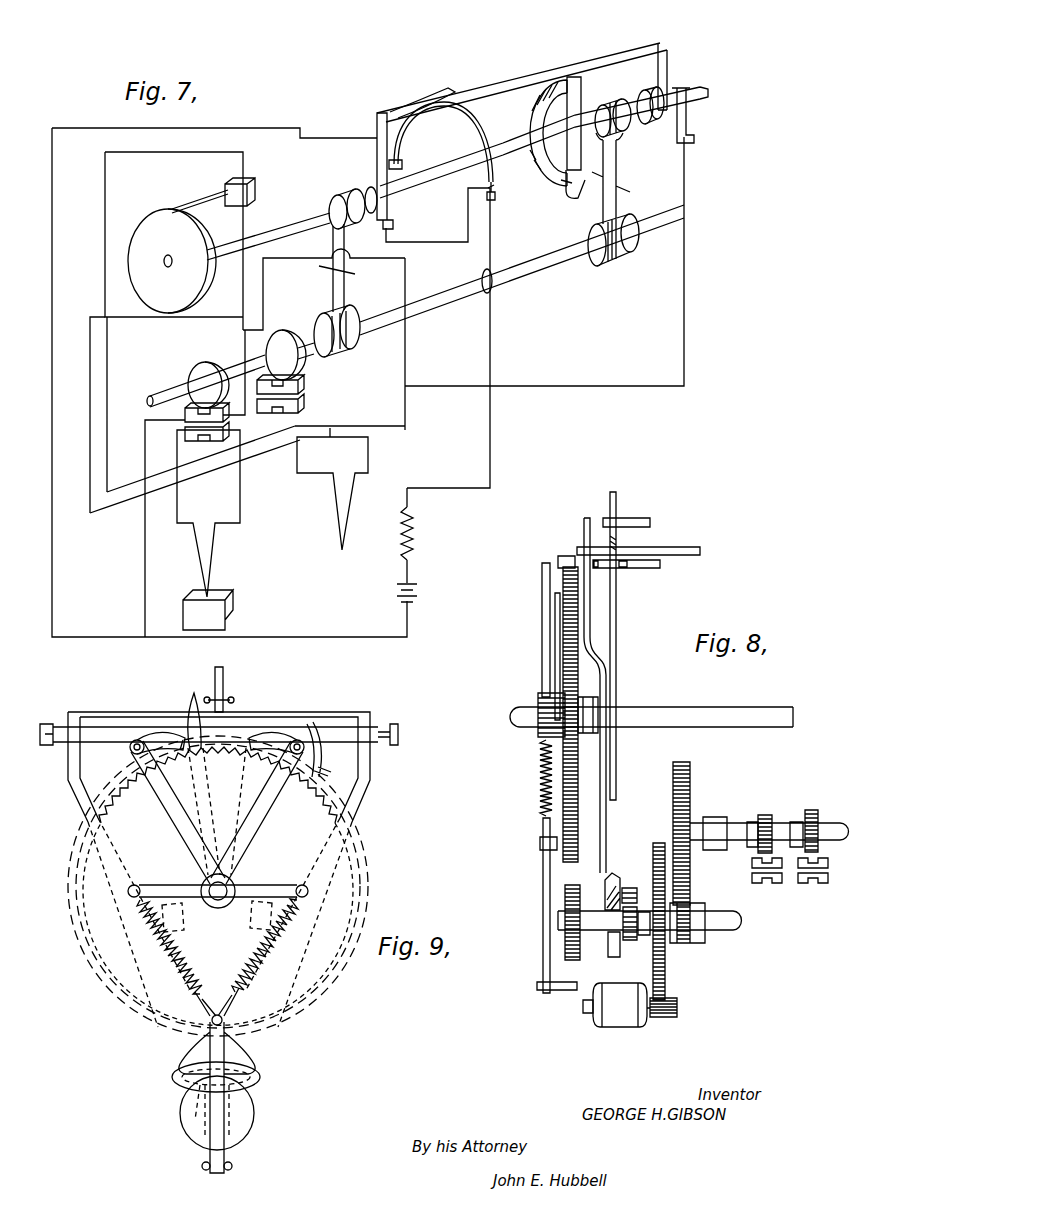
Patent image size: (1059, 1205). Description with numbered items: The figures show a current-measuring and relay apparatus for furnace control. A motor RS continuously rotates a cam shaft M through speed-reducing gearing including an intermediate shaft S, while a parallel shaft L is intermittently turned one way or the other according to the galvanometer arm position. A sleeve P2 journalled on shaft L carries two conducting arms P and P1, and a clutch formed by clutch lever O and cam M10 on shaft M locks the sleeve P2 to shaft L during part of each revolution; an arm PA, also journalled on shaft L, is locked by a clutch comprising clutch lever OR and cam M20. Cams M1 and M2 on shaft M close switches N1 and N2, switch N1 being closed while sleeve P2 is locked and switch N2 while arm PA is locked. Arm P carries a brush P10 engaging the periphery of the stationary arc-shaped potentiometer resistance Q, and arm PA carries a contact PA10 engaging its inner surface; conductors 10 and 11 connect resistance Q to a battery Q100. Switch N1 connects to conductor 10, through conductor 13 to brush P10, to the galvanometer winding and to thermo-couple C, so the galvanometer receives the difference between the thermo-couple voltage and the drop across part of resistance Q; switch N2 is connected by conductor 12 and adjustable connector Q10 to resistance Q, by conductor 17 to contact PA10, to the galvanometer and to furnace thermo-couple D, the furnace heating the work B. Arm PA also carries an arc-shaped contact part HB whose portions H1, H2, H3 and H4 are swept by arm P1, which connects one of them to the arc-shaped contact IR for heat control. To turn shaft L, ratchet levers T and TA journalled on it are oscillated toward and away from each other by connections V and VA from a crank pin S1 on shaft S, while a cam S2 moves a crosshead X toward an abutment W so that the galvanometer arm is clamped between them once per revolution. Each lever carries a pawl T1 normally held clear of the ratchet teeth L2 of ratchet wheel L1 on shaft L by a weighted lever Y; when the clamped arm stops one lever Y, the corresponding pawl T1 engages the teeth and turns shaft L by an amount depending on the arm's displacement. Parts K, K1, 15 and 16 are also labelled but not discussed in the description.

In FIG. 7, the conductor 10 is at (86, 637).
In FIG. 7, the conductor 11 is at (494, 350).
In FIG. 7, the conductor 12 is at (263, 305).
In FIG. 7, the conductor 13 is at (408, 351).
In FIG. 7, the circuit wire 15 is at (108, 468).
In FIG. 7, the circuit wire 16 is at (113, 513).
In FIG. 7, the conductor 17 is at (458, 384).
In FIG. 7, the battery Q100 is at (425, 596).
In FIG. 7, the work B is at (183, 612).
In FIG. 7, the thermo-couple C is at (212, 592).
In FIG. 7, the furnace thermo-couple D is at (342, 550).
In FIG. 7, the ratchet wheel L1 is at (150, 232).
In FIG. 8, the ratchet wheel L1 is at (578, 792).
In FIG. 9, the ratchet wheel L1 is at (336, 975).
In FIG. 7, the shaft L is at (297, 225).
In FIG. 8, the shaft L is at (702, 718).
In FIG. 9, the shaft L is at (219, 902).
In FIG. 7, the rod K1 is at (212, 198).
In FIG. 7, the block K is at (255, 200).
In FIG. 7, the clutch lever O is at (349, 286).
In FIG. 7, the shaft M is at (160, 390).
In FIG. 8, the shaft M is at (836, 842).
In FIG. 7, the cam M1 is at (205, 362).
In FIG. 8, the cam M1 is at (766, 814).
In FIG. 7, the cam M2 is at (283, 330).
In FIG. 8, the cam M2 is at (812, 810).
In FIG. 7, the cam M10 is at (335, 314).
In FIG. 7, the cam M20 is at (633, 252).
In FIG. 7, the switch N1 is at (185, 412).
In FIG. 8, the switch N1 is at (762, 884).
In FIG. 7, the switch N2 is at (300, 385).
In FIG. 8, the switch N2 is at (805, 884).
In FIG. 7, the arm P is at (377, 126).
In FIG. 7, the contact PA10 is at (496, 80).
In FIG. 7, the arm PA is at (670, 55).
In FIG. 7, the arm P1 is at (603, 96).
In FIG. 7, the brush P10 is at (396, 110).
In FIG. 7, the sleeve P2 is at (447, 178).
In FIG. 7, the potentiometer resistance Q is at (470, 128).
In FIG. 7, the connector Q10 is at (494, 203).
In FIG. 7, the contact portion H1 is at (573, 74).
In FIG. 7, the contact portion H2 is at (527, 110).
In FIG. 7, the contact part HB is at (531, 95).
In FIG. 7, the contact portion H3 is at (495, 192).
In FIG. 7, the contact portion H4 is at (566, 185).
In FIG. 7, the arc shaped contact IR is at (580, 200).
In FIG. 7, the clutch lever OR is at (618, 172).
In FIG. 8, the ratchet lever T is at (542, 622).
In FIG. 9, the ratchet lever T is at (178, 823).
In FIG. 8, the ratchet lever TA is at (555, 660).
In FIG. 9, the ratchet lever TA is at (263, 826).
In FIG. 8, the pawl T1 is at (562, 556).
In FIG. 9, the pawl T1 is at (153, 733).
In FIG. 8, the crosshead X is at (617, 586).
In FIG. 9, the crosshead X is at (342, 713).
In FIG. 8, the weighted lever Y is at (591, 600).
In FIG. 9, the weighted lever Y is at (217, 840).
In FIG. 8, the abutment W is at (660, 565).
In FIG. 9, the abutment W is at (350, 758).
In FIG. 9, the ratchet teeth L2 is at (340, 790).
In FIG. 8, the connection V is at (540, 772).
In FIG. 9, the connection V is at (168, 950).
In FIG. 9, the connection VA is at (262, 970).
In FIG. 8, the intermediate shaft S is at (728, 931).
In FIG. 9, the intermediate shaft S is at (195, 1110).
In FIG. 8, the crank pin S1 is at (543, 908).
In FIG. 9, the crank pin S1 is at (245, 1082).
In FIG. 8, the cam S2 is at (631, 942).
In FIG. 8, the motor RS is at (620, 1027).